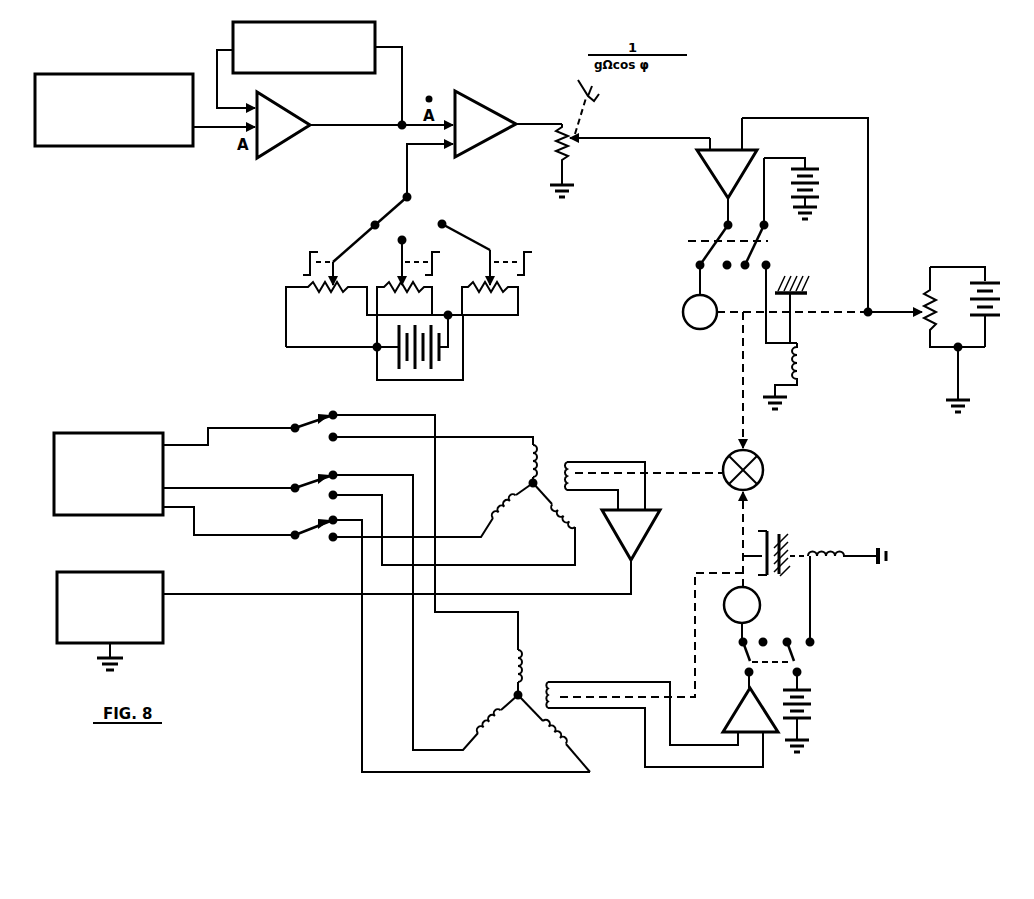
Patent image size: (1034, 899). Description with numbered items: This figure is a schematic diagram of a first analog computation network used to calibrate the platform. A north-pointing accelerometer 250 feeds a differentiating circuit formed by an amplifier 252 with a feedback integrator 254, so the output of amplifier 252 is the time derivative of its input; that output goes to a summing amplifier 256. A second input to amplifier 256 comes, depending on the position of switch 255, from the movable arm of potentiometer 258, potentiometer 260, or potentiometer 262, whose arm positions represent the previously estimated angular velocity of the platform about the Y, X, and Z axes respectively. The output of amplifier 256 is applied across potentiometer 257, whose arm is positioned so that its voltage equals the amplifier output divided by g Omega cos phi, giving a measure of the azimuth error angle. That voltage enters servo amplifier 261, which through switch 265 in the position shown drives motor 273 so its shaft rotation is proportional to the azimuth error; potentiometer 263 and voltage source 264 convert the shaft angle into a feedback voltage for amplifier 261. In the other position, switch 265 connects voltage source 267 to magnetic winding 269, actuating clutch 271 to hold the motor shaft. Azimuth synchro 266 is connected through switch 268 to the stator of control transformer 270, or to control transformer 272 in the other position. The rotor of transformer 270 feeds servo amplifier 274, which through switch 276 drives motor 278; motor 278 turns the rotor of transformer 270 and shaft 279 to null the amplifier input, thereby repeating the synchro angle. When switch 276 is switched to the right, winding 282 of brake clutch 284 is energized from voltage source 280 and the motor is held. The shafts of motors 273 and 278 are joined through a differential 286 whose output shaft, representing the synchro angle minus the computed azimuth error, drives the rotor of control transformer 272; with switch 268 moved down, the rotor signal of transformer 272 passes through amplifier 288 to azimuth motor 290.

The north-pointing accelerometer 250 is at (125, 133).
The amplifier 252 is at (288, 128).
The feedback integrator 254 is at (355, 32).
The switch 255 is at (392, 214).
The summing amplifier 256 is at (478, 123).
The potentiometer 257 is at (556, 138).
The potentiometer 258 is at (340, 284).
The potentiometer 260 is at (410, 289).
The servo amplifier 261 is at (722, 166).
The potentiometer 262 is at (500, 289).
The potentiometer 263 is at (928, 298).
The voltage source 264 is at (992, 279).
The switch 265 is at (706, 240).
The azimuth synchro 266 is at (63, 440).
The voltage source 267 is at (810, 168).
The switch 268 is at (315, 421).
The magnetic winding 269 is at (800, 353).
The control transformer 270 is at (511, 692).
The clutch 271 is at (773, 282).
The control transformer 272 is at (527, 479).
The motor 273 is at (684, 312).
The servo amplifier 274 is at (743, 724).
The switch 276 is at (800, 661).
The motor 278 is at (760, 608).
The shaft 279 is at (748, 514).
The voltage source 280 is at (805, 688).
The winding 282 is at (832, 559).
The brake clutch 284 is at (781, 533).
The differential 286 is at (758, 463).
The amplifier 288 is at (636, 527).
The azimuth motor 290 is at (143, 632).